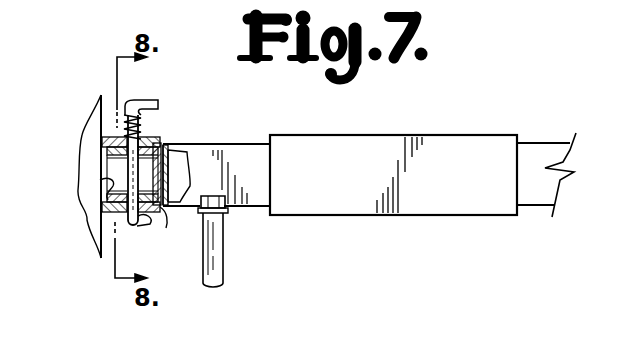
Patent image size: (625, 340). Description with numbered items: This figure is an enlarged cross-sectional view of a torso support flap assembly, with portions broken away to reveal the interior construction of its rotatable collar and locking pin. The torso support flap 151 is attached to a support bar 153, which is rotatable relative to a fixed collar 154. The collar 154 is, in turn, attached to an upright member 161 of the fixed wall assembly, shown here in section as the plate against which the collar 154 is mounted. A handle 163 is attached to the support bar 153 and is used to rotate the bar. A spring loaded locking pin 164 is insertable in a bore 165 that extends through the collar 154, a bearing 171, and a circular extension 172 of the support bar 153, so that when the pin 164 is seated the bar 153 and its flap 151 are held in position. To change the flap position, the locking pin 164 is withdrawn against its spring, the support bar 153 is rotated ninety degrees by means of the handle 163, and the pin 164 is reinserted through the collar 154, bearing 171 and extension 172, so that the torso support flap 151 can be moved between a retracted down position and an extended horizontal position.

The torso support flap 151 is at (355, 135).
The support bar 153 is at (235, 143).
The fixed collar 154 is at (151, 137).
The upright member 161 is at (88, 214).
The handle 163 is at (218, 290).
The spring loaded locking pin 164 is at (148, 97).
The bore 165 is at (103, 160).
The bearing 171 is at (166, 228).
The circular extension 172 is at (100, 180).